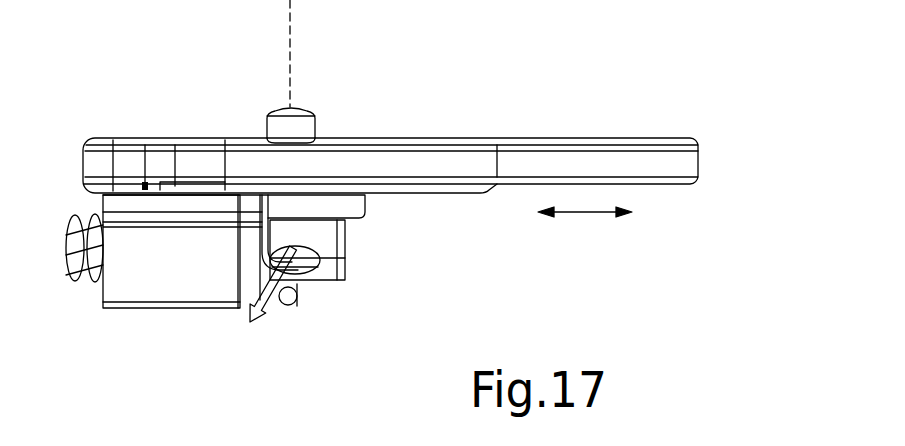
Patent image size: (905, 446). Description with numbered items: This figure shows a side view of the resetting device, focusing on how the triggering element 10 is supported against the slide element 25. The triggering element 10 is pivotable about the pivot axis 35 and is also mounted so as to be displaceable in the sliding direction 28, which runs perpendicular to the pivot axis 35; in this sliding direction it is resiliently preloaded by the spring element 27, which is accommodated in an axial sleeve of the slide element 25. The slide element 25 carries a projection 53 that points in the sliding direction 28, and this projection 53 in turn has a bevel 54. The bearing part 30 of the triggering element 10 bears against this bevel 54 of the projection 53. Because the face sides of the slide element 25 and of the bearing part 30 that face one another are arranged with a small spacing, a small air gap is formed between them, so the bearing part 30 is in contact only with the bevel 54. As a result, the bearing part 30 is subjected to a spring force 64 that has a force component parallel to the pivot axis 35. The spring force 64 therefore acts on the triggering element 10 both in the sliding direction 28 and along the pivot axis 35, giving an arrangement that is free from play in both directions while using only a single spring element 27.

The triggering element 10 is at (588, 163).
The pivot axis 35 is at (293, 32).
The slide element 25 is at (163, 285).
The spring element 27 is at (78, 282).
The bearing part 30 is at (338, 267).
The bevel 54 is at (300, 292).
The projection 53 is at (296, 312).
The spring force 64 is at (270, 316).
The sliding direction 28 is at (582, 213).